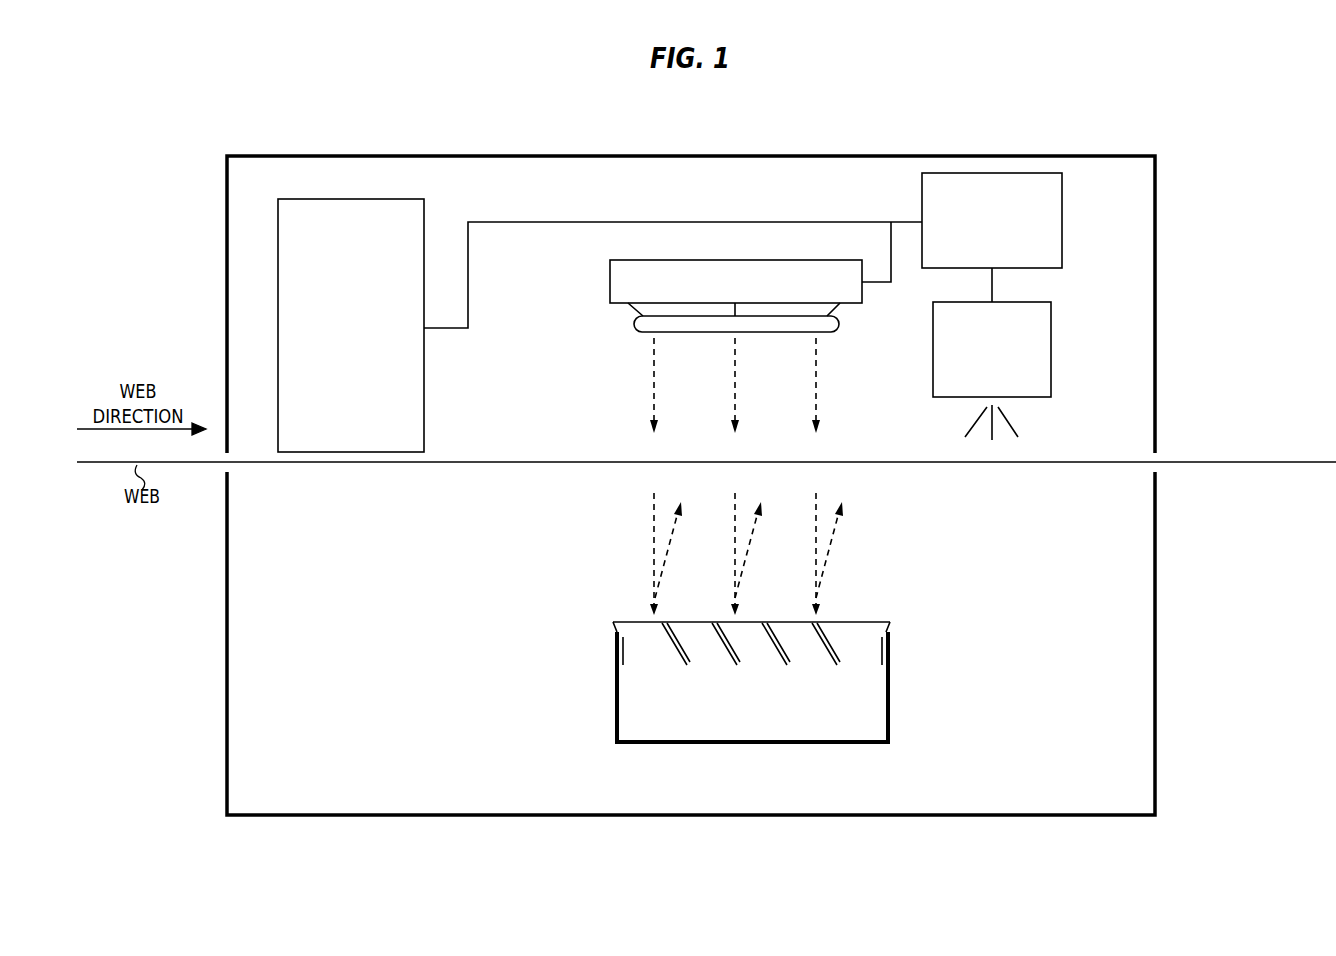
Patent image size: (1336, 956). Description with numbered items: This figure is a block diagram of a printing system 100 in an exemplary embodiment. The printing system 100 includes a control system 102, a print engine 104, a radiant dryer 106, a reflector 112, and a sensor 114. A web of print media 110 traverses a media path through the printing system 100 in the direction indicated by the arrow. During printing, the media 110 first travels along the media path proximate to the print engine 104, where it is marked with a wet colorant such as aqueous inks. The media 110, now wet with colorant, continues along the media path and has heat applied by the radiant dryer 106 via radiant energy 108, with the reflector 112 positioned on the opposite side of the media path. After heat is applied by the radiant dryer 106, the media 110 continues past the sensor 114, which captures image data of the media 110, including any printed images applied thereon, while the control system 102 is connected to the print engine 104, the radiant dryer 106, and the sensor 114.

The printing system 100 is at (1195, 88).
The control system 102 is at (976, 255).
The print engine 104 is at (368, 360).
The radiant dryer 106 is at (610, 283).
The radiant energy 108 is at (651, 371).
The web of print media 110 is at (523, 461).
The reflector 112 is at (617, 688).
The sensor 114 is at (977, 374).